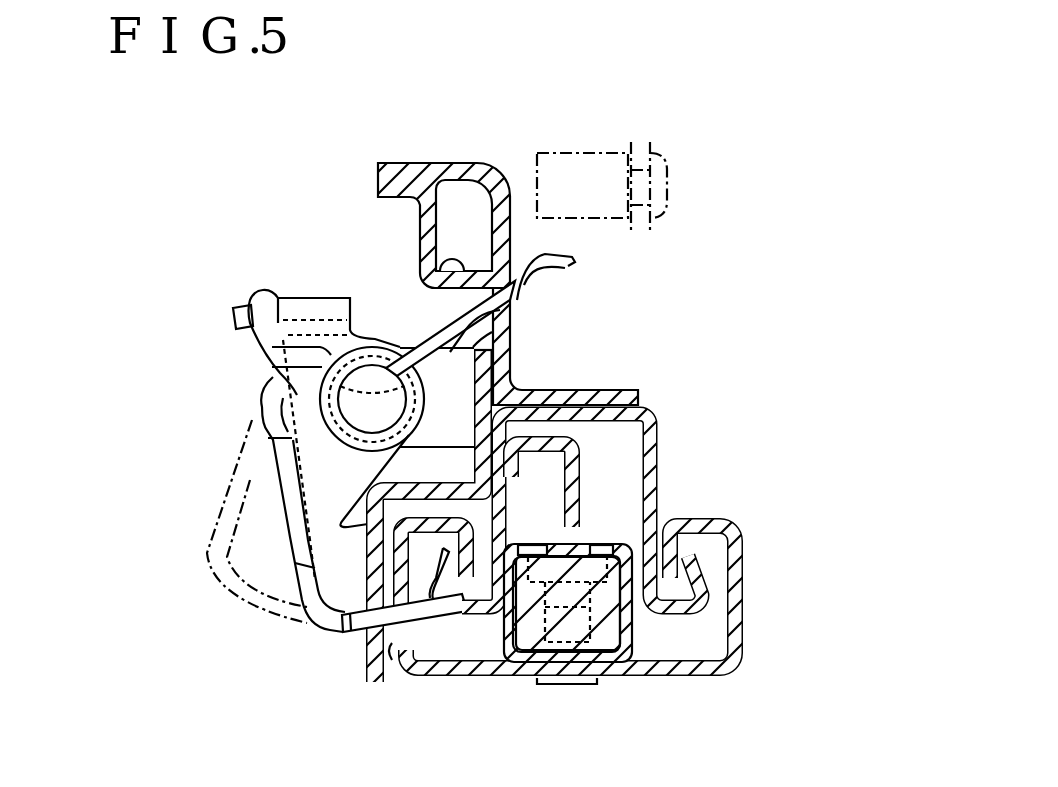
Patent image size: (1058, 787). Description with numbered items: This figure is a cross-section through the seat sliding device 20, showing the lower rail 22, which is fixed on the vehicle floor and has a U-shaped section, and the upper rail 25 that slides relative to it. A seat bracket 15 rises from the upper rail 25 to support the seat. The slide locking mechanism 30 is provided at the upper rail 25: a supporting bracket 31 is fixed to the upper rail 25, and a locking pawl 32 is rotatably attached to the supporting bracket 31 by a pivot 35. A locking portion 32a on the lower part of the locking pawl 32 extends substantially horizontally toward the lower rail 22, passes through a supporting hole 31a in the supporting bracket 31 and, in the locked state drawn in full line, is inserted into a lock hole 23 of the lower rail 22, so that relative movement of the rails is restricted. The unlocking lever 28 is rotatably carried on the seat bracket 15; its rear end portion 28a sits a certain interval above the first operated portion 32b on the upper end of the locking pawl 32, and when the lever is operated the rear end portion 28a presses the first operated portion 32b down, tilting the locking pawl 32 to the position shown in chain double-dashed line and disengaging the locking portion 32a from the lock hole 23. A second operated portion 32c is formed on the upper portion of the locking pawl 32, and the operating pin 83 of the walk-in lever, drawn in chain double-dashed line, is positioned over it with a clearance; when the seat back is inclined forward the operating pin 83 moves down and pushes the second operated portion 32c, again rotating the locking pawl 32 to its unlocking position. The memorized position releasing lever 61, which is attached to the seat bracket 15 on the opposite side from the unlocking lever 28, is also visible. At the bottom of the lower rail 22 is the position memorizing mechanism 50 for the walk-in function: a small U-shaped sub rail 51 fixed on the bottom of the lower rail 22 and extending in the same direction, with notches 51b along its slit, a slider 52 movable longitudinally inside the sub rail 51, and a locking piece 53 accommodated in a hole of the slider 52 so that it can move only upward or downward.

The seat bracket 15 is at (474, 251).
The sliding device 20 is at (586, 651).
The lower rail 22 is at (744, 627).
The lock hole 23 is at (392, 643).
The upper rail 25 is at (658, 436).
The unlocking lever 28 is at (377, 190).
The rear end portion 28a is at (440, 265).
The slide locking mechanism 30 is at (230, 408).
The supporting bracket 31 is at (313, 533).
The supporting hole 31a is at (358, 634).
The locking pawl 32 is at (444, 512).
The locking portion 32a is at (412, 640).
The first operated portion 32b is at (508, 324).
The second operated portion 32c is at (567, 265).
The pivot 35 is at (272, 366).
The position memorizing mechanism 50 is at (640, 619).
The sub rail 51 is at (637, 601).
The notch 51b is at (545, 545).
The slider 52 is at (523, 652).
The locking piece 53 is at (563, 580).
The memorized position releasing lever 61 is at (580, 447).
The operating pin 83 is at (597, 222).